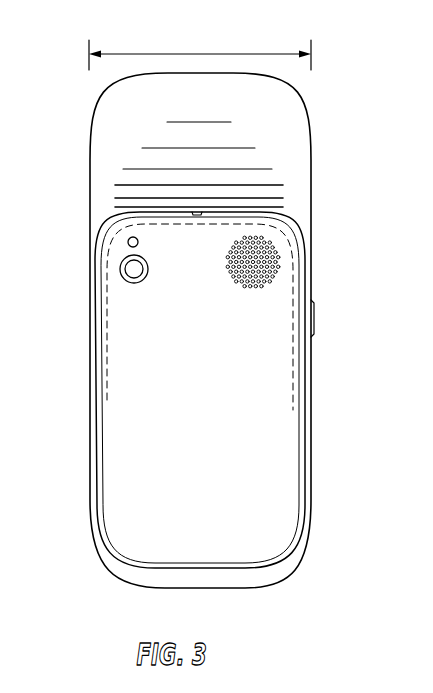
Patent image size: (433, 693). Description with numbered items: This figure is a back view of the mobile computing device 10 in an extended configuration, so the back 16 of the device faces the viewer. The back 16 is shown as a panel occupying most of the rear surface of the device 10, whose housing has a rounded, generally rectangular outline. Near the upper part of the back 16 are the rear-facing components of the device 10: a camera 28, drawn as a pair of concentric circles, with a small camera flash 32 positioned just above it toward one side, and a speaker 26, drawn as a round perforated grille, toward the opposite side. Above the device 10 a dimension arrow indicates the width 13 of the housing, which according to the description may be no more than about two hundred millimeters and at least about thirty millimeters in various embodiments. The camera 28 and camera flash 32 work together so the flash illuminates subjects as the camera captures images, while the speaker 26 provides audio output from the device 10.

The device 10 is at (316, 94).
The width 13 is at (188, 54).
The back 16 is at (190, 438).
The speaker 26 is at (272, 255).
The camera 28 is at (120, 271).
The camera flash 32 is at (128, 241).